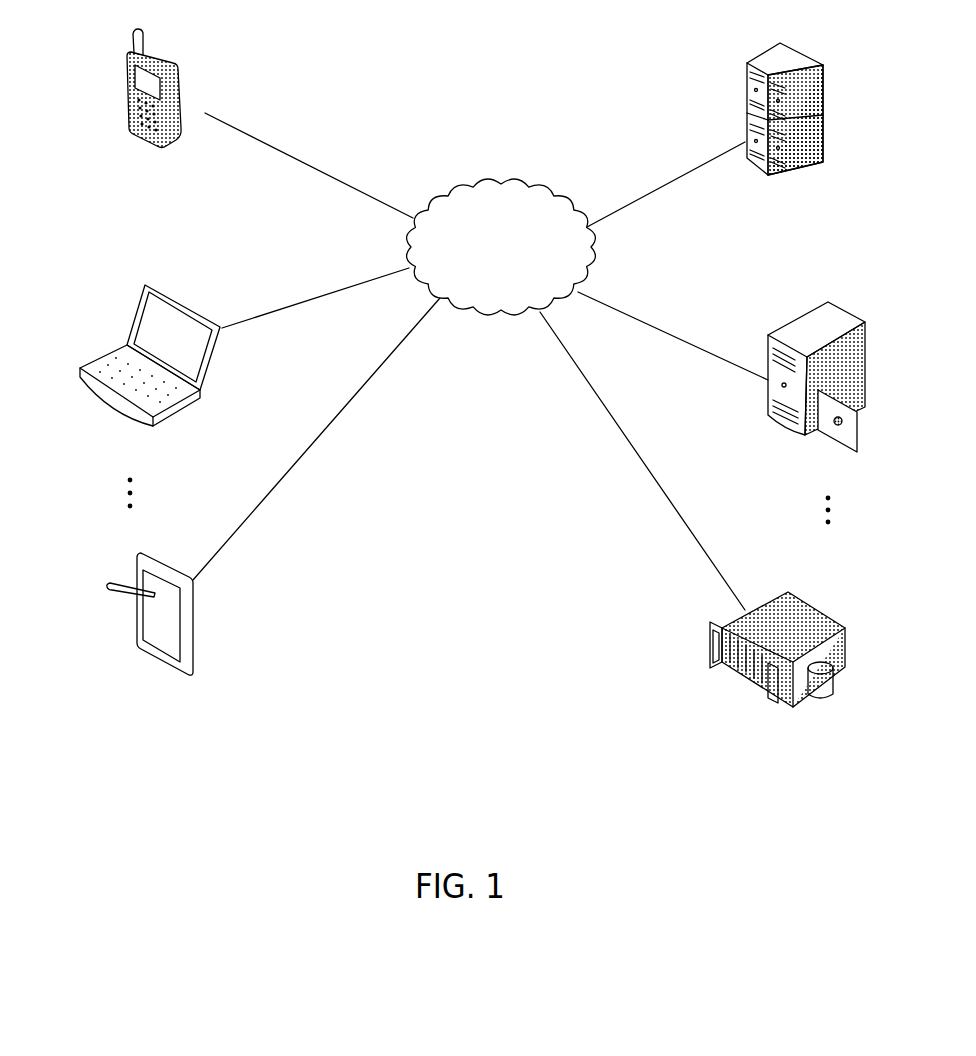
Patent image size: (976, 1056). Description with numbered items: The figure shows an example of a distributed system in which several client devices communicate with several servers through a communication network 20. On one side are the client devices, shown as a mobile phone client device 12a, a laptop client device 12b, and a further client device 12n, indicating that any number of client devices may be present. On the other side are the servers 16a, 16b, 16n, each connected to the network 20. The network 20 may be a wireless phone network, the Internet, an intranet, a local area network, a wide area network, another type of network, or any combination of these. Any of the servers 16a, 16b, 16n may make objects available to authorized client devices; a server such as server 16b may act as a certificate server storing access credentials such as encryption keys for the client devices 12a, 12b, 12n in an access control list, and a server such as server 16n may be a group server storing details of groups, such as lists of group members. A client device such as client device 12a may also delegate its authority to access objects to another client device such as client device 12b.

The client device 12a is at (122, 88).
The client device 12b is at (128, 307).
The client device 12n is at (135, 642).
The server 16a is at (816, 62).
The server 16b is at (855, 315).
The server 16n is at (847, 652).
The communication network 20 is at (500, 179).